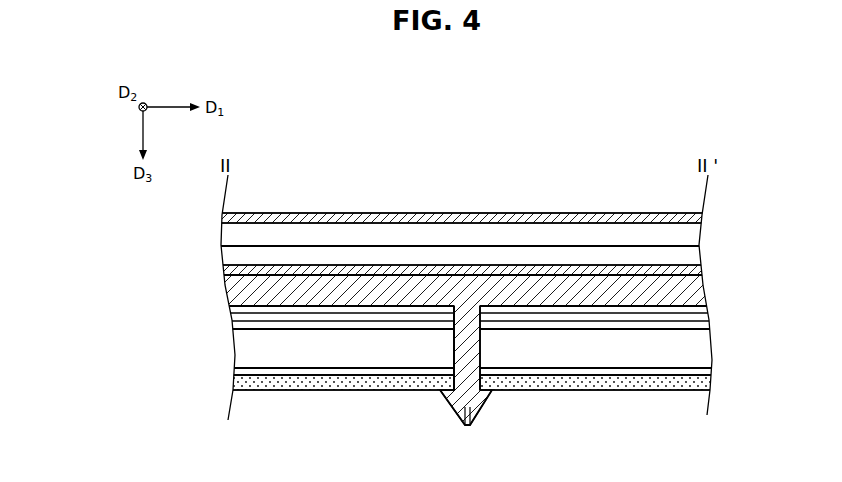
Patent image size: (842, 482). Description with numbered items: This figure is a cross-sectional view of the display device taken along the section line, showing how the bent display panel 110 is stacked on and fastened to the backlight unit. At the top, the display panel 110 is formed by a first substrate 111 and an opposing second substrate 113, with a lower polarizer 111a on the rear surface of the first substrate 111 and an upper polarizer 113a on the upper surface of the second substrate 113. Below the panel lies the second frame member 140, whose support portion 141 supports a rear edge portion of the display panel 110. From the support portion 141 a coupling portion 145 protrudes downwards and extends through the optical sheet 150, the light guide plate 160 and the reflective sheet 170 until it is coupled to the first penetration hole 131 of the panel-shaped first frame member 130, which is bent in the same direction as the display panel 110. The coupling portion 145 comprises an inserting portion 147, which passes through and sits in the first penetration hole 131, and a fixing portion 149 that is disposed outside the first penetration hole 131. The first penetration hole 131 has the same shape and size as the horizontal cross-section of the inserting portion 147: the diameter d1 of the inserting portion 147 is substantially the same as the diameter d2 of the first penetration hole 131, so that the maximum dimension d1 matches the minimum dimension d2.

The display panel 110 is at (522, 241).
The first substrate 111 is at (676, 252).
The lower polarizer 111a is at (700, 272).
The second substrate 113 is at (676, 235).
The upper polarizer 113a is at (700, 218).
The first frame member 130 is at (693, 383).
The first penetration hole 131 is at (470, 393).
The second frame member 140 is at (381, 350).
The support portion 141 is at (250, 291).
The coupling portion 145 is at (297, 365).
The inserting portion 147 is at (453, 351).
The fixing portion 149 is at (453, 400).
The optical sheet 150 is at (691, 327).
The light guide plate 160 is at (693, 348).
The reflective sheet 170 is at (693, 368).
The diameter of the cross-section of the inserting portion d1 is at (455, 358).
The diameter of the first penetration hole d2 is at (454, 393).